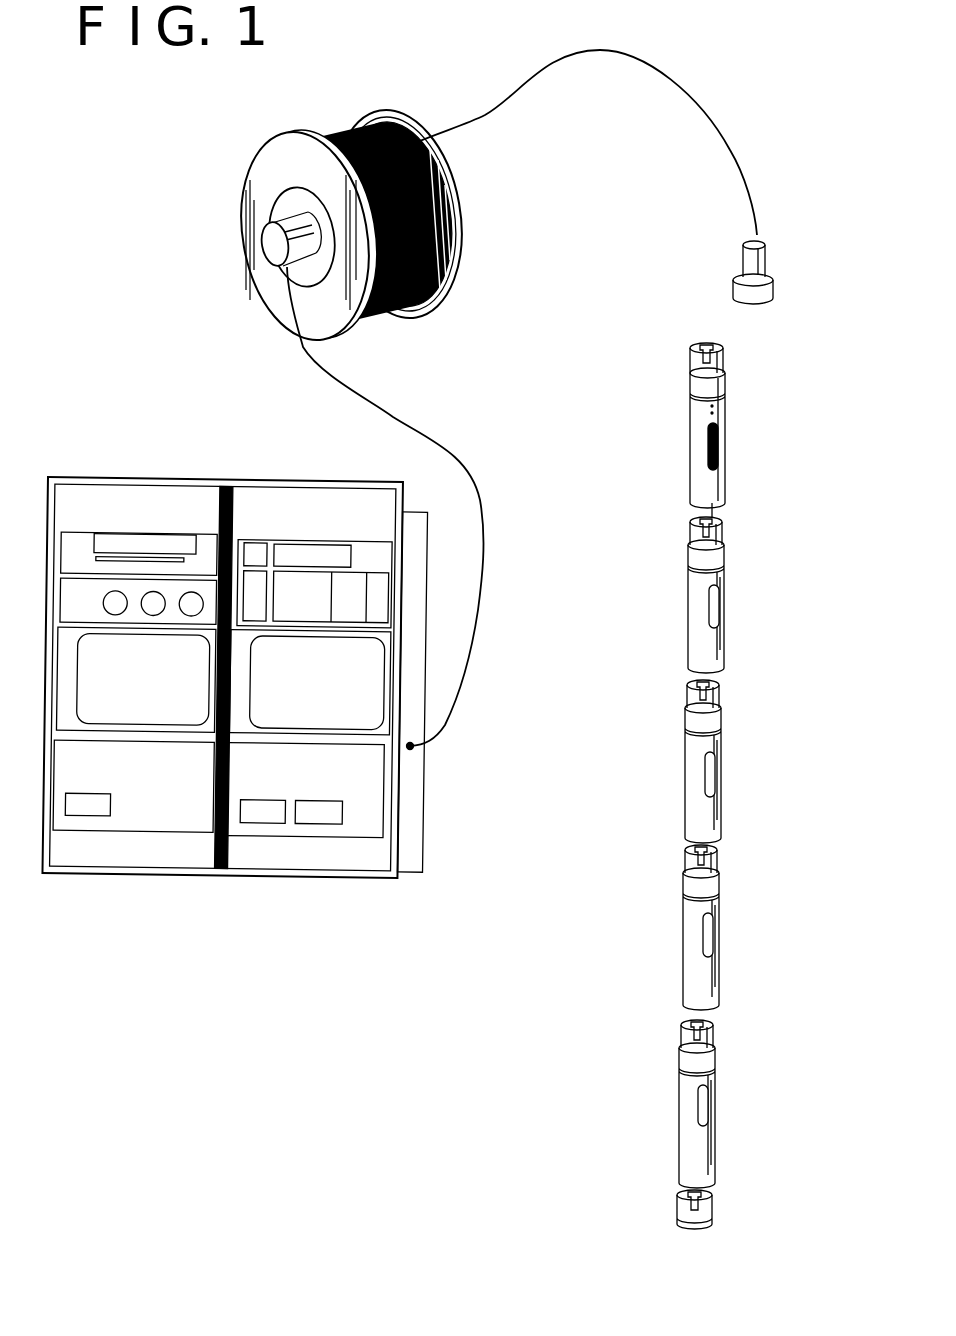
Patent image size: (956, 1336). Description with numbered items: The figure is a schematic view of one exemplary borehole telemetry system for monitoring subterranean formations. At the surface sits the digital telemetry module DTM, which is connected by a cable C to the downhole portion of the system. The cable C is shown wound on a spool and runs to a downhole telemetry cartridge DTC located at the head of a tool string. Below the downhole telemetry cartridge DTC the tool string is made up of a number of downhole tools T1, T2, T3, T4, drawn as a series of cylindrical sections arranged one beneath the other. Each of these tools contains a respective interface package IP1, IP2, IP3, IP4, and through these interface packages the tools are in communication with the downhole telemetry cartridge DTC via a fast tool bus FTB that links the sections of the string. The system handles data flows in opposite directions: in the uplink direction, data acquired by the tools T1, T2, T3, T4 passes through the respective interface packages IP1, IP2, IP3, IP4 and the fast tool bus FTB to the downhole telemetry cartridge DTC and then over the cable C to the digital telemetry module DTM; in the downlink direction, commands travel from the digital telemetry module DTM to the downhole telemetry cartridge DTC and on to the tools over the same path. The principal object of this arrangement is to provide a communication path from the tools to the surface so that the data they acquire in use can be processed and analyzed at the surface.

The cable C is at (467, 130).
The digital telemetry module DTM is at (358, 560).
The downhole telemetry cartridge DTC is at (724, 399).
The fast tool bus FTB is at (714, 512).
The downhole tool T1 is at (724, 575).
The downhole tool T2 is at (721, 743).
The downhole tool T3 is at (718, 903).
The downhole tool T4 is at (715, 1077).
The interface package IP1 is at (719, 606).
The interface package IP2 is at (715, 778).
The interface package IP3 is at (713, 940).
The interface package IP4 is at (709, 1112).